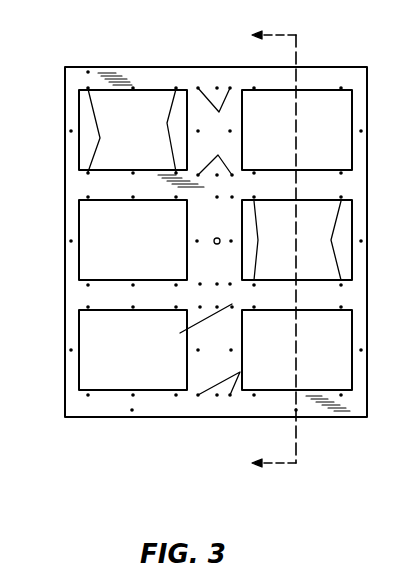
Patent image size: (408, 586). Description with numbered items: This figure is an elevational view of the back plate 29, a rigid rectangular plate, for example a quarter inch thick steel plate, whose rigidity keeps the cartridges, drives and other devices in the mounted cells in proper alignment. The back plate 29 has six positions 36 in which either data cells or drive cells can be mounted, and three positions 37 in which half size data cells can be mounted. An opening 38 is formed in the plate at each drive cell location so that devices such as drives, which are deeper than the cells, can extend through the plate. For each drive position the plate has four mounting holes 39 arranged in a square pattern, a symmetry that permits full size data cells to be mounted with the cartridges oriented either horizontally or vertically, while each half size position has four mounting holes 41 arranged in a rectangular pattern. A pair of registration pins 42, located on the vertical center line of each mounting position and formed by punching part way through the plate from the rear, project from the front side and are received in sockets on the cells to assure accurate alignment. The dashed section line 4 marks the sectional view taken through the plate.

The back plate 29 is at (319, 75).
The positions 36 is at (85, 123).
The positions 37 is at (234, 118).
The opening 38 is at (80, 151).
The mounting holes 39 is at (100, 138).
The mounting holes 41 is at (219, 112).
The registration pins 42 is at (133, 88).
The section line 4- 4 is at (265, 253).